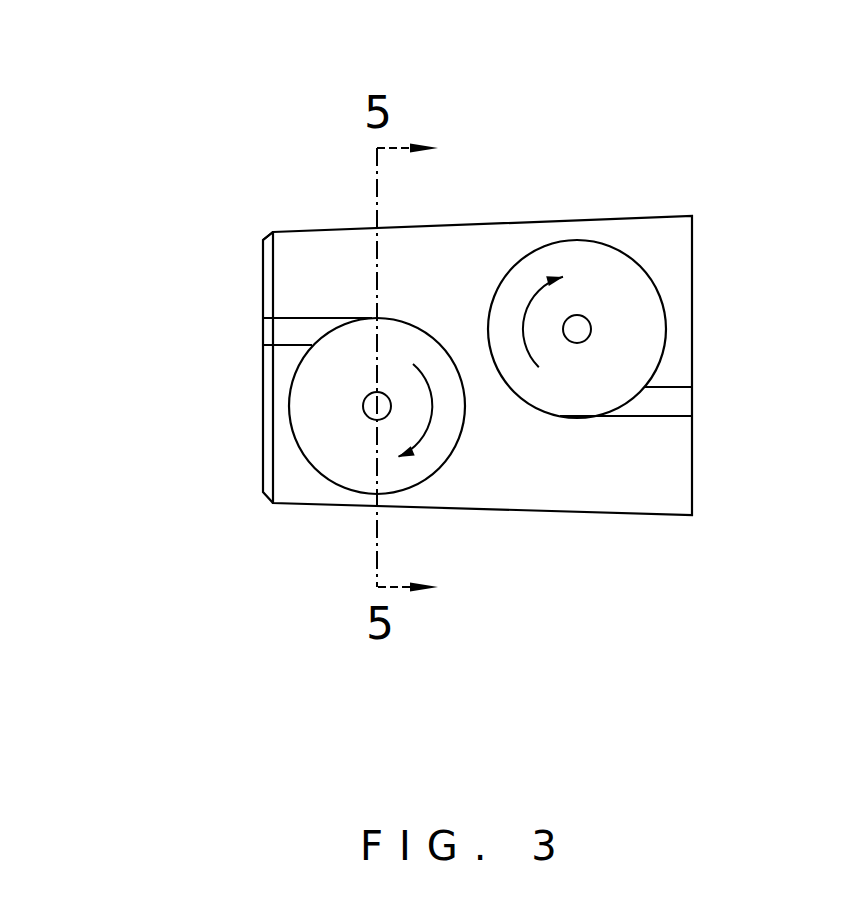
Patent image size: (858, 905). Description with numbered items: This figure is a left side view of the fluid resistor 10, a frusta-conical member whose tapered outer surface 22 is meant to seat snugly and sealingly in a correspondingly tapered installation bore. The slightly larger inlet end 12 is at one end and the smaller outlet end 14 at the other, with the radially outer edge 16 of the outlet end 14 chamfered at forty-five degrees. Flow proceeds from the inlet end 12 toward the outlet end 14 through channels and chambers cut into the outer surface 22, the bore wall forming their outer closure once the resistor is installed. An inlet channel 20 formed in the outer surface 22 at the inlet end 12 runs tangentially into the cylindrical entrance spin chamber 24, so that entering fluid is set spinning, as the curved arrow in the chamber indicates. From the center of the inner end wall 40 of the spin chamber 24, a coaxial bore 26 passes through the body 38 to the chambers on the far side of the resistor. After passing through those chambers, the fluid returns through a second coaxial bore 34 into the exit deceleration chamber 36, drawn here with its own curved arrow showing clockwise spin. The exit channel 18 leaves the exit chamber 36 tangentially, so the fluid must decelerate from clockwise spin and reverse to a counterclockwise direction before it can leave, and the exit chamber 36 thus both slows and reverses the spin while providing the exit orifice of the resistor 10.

The fluid resistor 10 is at (660, 72).
The inlet end 12 is at (693, 473).
The outlet end 14 is at (260, 433).
The radially outer edge 16 is at (267, 235).
The exit channel 18 is at (275, 332).
The inlet channel 20 is at (682, 402).
The outer surface 22 is at (625, 477).
The entrance spin chamber 24 is at (555, 392).
The coaxial bore 26 is at (580, 325).
The second coaxial bore 34 is at (370, 413).
The exit deceleration chamber 36 is at (325, 435).
The body 38 is at (452, 258).
The inner end wall 40 is at (620, 325).